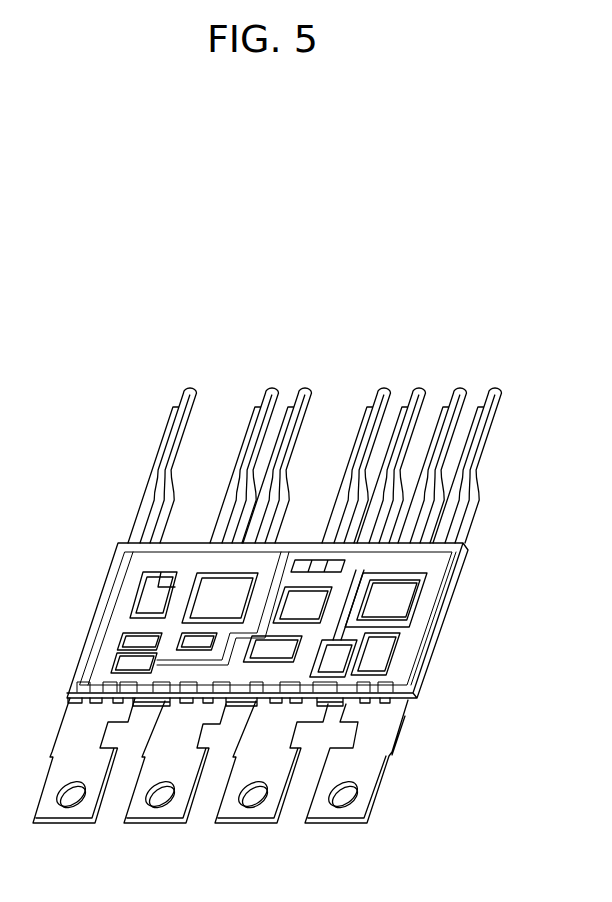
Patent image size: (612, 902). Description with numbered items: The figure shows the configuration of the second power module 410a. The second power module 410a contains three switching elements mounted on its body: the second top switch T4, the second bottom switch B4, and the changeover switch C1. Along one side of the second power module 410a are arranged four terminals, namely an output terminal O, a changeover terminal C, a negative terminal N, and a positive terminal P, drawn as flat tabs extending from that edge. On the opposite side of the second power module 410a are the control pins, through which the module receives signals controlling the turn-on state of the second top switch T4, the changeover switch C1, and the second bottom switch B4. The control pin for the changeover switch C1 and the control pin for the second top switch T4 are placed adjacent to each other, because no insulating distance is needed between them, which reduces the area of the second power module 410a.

The second power module 410a is at (172, 331).
The second bottom switch B4 is at (197, 595).
The second top switch T4 is at (352, 605).
The changeover switch C1 is at (325, 602).
The output terminal O is at (52, 813).
The changeover terminal C is at (142, 812).
The negative terminal N is at (233, 813).
The positive terminal P is at (322, 812).